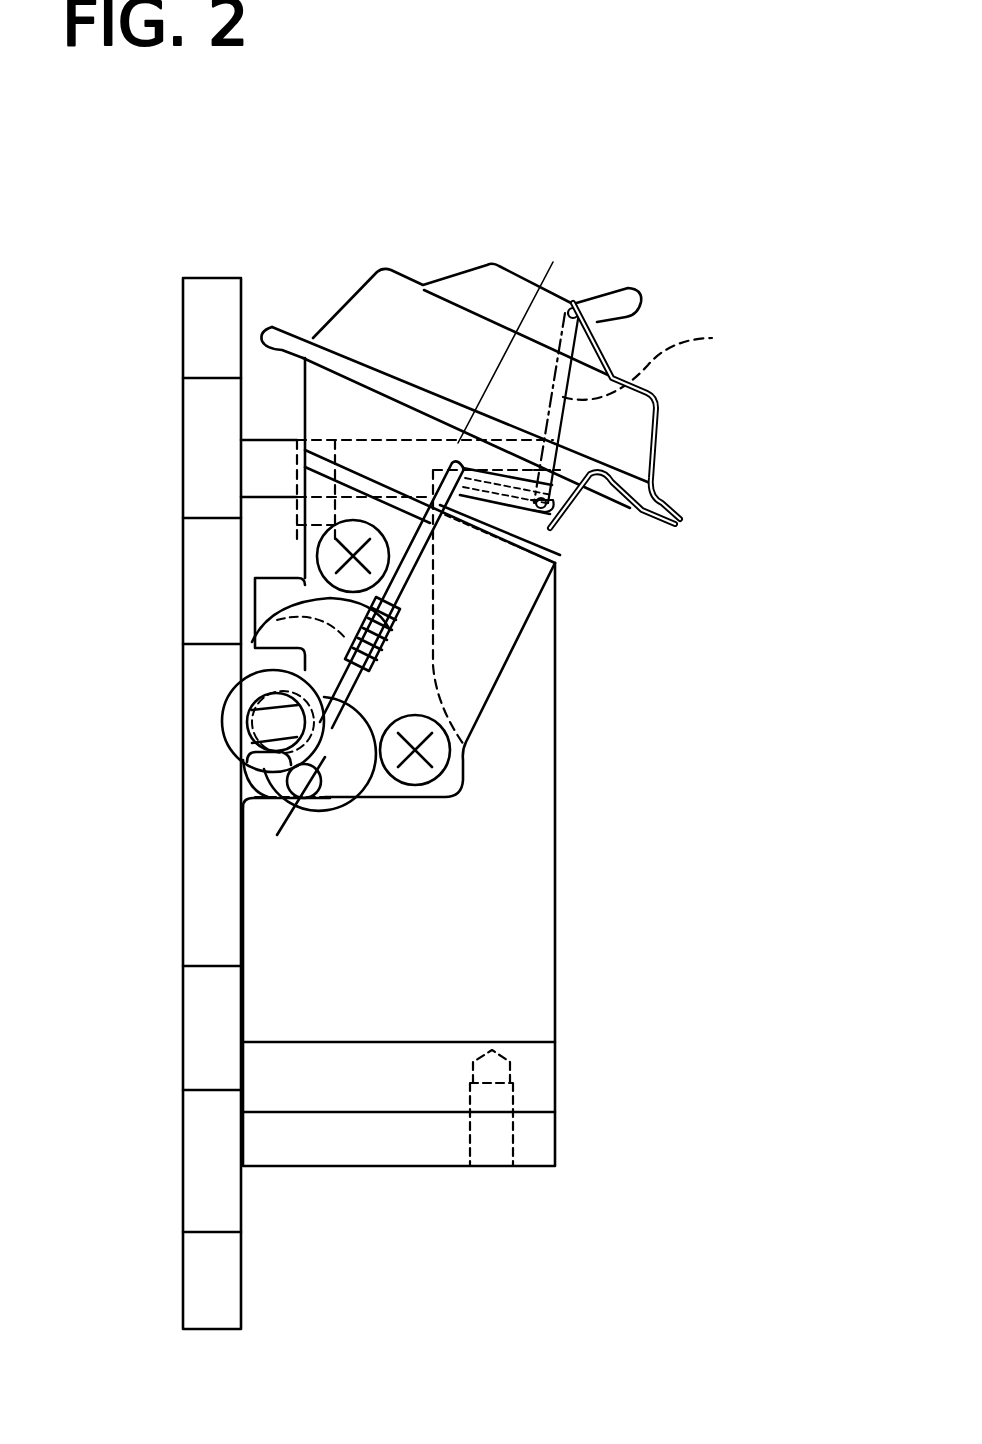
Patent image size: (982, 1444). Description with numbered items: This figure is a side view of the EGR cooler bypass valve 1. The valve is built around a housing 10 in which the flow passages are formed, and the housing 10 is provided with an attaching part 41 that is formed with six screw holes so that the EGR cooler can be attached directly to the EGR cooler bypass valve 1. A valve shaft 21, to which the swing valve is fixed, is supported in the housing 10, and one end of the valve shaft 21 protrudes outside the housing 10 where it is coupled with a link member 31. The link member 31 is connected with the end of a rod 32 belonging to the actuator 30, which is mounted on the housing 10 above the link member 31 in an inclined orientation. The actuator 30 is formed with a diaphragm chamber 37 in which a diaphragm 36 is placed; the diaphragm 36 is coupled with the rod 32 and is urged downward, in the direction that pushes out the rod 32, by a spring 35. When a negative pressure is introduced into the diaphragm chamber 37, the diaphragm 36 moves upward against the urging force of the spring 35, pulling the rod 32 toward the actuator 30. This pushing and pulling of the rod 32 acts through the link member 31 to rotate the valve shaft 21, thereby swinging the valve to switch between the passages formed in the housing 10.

The EGR cooler bypass valve 1 is at (652, 130).
The housing 10 is at (558, 955).
The valve shaft 21 is at (268, 727).
The actuator 30 is at (382, 266).
The link member 31 is at (357, 777).
The rod 32 is at (300, 600).
The spring 35 is at (712, 338).
The diaphragm 36 is at (578, 551).
The diaphragm chamber 37 is at (620, 433).
The attaching part 41 is at (182, 545).